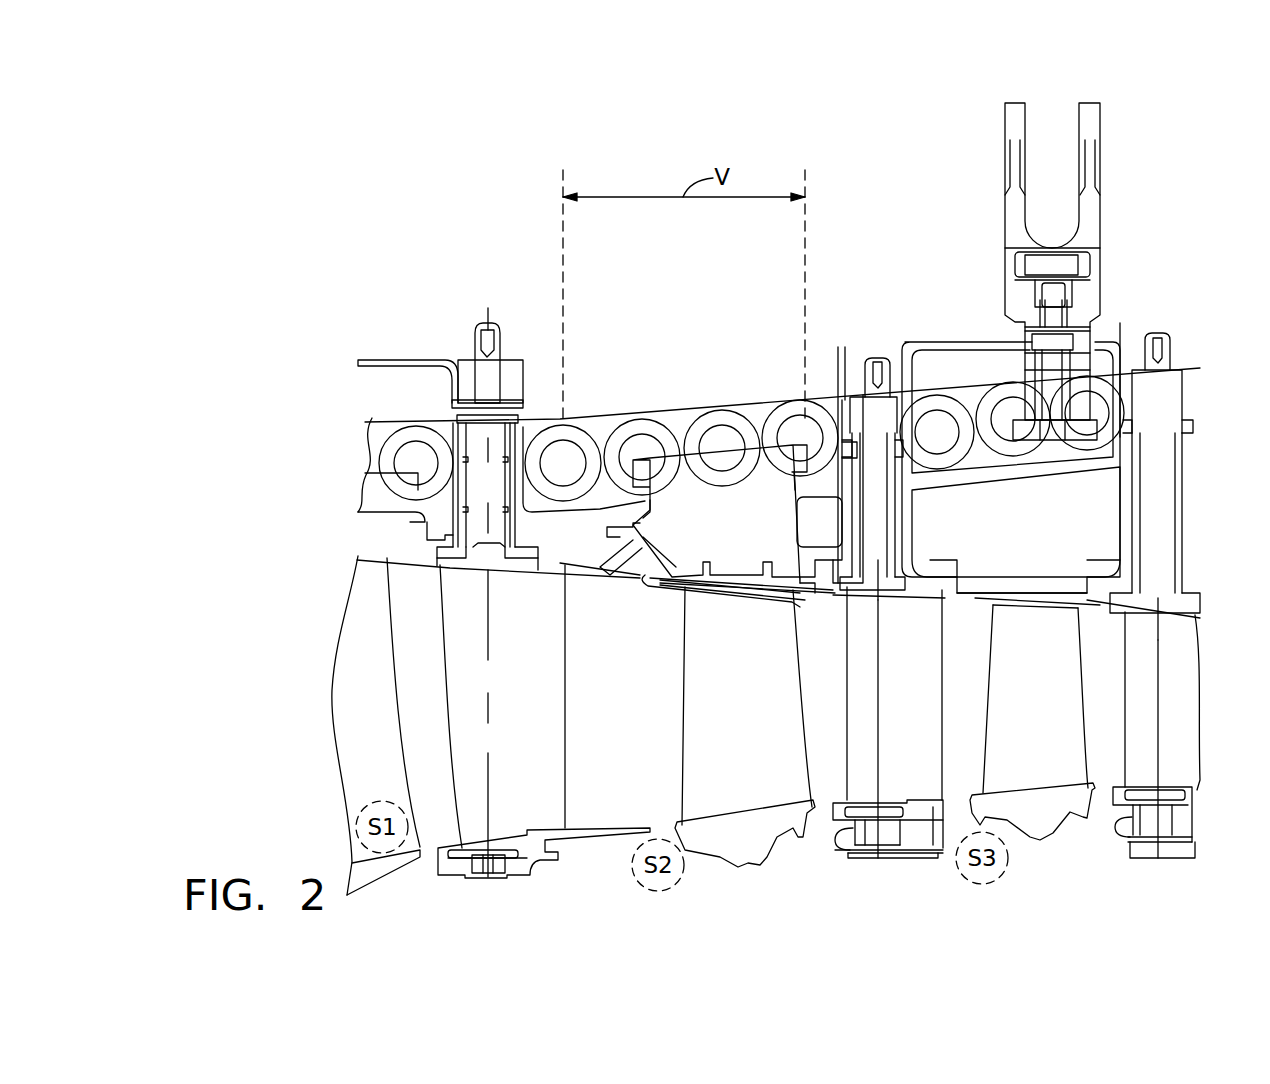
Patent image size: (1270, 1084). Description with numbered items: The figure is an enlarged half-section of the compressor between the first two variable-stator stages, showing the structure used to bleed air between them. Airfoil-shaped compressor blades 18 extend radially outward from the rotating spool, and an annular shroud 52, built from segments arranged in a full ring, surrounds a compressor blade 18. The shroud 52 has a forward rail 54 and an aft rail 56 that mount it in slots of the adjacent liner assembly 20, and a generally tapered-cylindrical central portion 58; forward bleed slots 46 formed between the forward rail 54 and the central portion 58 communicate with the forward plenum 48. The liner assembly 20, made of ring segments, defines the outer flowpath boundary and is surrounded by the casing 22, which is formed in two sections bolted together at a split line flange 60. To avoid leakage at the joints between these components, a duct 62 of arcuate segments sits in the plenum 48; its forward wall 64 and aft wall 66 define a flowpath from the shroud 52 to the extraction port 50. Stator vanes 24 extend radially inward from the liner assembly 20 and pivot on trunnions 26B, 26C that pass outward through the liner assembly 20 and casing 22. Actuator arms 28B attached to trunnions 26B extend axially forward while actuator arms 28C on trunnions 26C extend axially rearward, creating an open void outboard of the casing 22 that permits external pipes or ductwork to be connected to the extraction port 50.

The compressor blade 18 is at (725, 717).
The liner assembly 20 is at (344, 528).
The casing 22 is at (1038, 491).
The stator vane 24 is at (508, 734).
The trunnion 26B is at (478, 393).
The trunnion 26C is at (866, 357).
The actuator arm 28B is at (414, 352).
The actuator arm 28C is at (953, 342).
The forward bleed slot 46 is at (650, 577).
The forward plenum 48 is at (712, 515).
The extraction port 50 is at (772, 441).
The shroud 52 is at (669, 607).
The forward rail 54 is at (617, 536).
The aft rail 56 is at (823, 565).
The central portion 58 is at (735, 577).
The split line flange 60 is at (604, 422).
The duct 62 is at (675, 465).
The forward wall 64 is at (651, 513).
The aft wall 66 is at (793, 476).